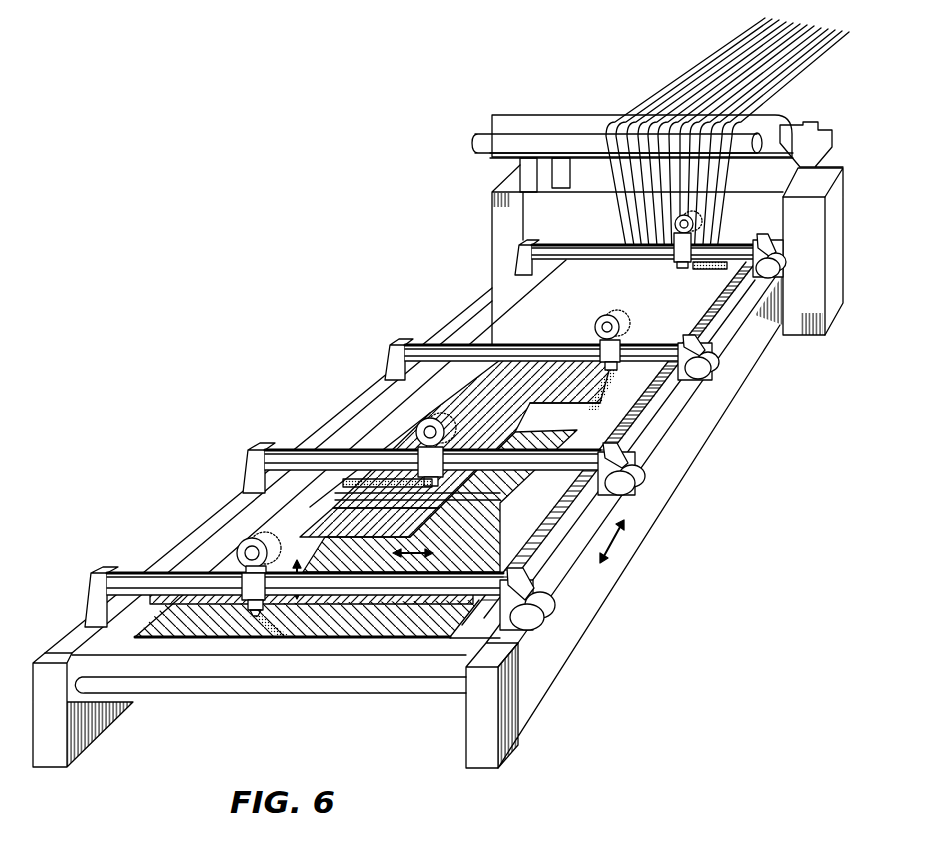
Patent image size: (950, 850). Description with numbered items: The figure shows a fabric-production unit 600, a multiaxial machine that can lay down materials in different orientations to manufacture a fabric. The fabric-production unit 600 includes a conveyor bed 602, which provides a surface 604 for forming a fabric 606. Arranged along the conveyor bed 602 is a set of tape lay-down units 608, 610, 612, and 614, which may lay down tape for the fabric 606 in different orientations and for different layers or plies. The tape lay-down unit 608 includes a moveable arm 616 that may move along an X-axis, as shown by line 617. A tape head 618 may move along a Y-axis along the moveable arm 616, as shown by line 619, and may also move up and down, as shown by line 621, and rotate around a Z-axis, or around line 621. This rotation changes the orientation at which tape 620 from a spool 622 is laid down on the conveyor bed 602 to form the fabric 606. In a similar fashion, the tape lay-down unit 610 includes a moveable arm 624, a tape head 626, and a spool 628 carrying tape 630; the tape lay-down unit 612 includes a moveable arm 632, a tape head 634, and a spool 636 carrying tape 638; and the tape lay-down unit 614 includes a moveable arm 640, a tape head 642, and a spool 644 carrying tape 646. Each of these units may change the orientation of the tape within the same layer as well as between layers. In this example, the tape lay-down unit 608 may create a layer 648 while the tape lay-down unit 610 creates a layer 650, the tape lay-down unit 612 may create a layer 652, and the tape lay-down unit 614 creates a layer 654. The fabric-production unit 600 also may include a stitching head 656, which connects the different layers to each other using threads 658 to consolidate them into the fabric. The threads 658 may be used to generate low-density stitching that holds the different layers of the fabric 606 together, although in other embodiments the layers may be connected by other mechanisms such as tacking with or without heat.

The fabric-production unit 600 is at (306, 242).
The conveyor bed 602 is at (368, 700).
The surface 604 is at (183, 652).
The fabric 606 is at (513, 357).
The tape lay-down unit 608 is at (553, 607).
The tape lay-down unit 610 is at (645, 481).
The tape lay-down unit 612 is at (700, 373).
The tape lay-down unit 614 is at (783, 262).
The moveable arm 616 is at (523, 582).
The line 617 is at (605, 554).
The tape head 618 is at (250, 592).
The line 619 is at (433, 553).
The tape 620 is at (257, 542).
The line 621 is at (318, 555).
The spool 622 is at (242, 556).
The moveable arm 624 is at (620, 455).
The tape head 626 is at (467, 477).
The spool 628 is at (448, 438).
The tape 630 is at (443, 424).
The moveable arm 632 is at (707, 343).
The tape head 634 is at (600, 366).
The spool 636 is at (598, 325).
The tape 638 is at (617, 322).
The moveable arm 640 is at (772, 253).
The tape head 642 is at (638, 267).
The spool 644 is at (672, 232).
The tape 646 is at (693, 223).
The layer 648 is at (313, 634).
The layer 650 is at (373, 478).
The layer 652 is at (610, 391).
The layer 654 is at (700, 277).
The stitching head 656 is at (552, 115).
The threads 658 is at (681, 80).